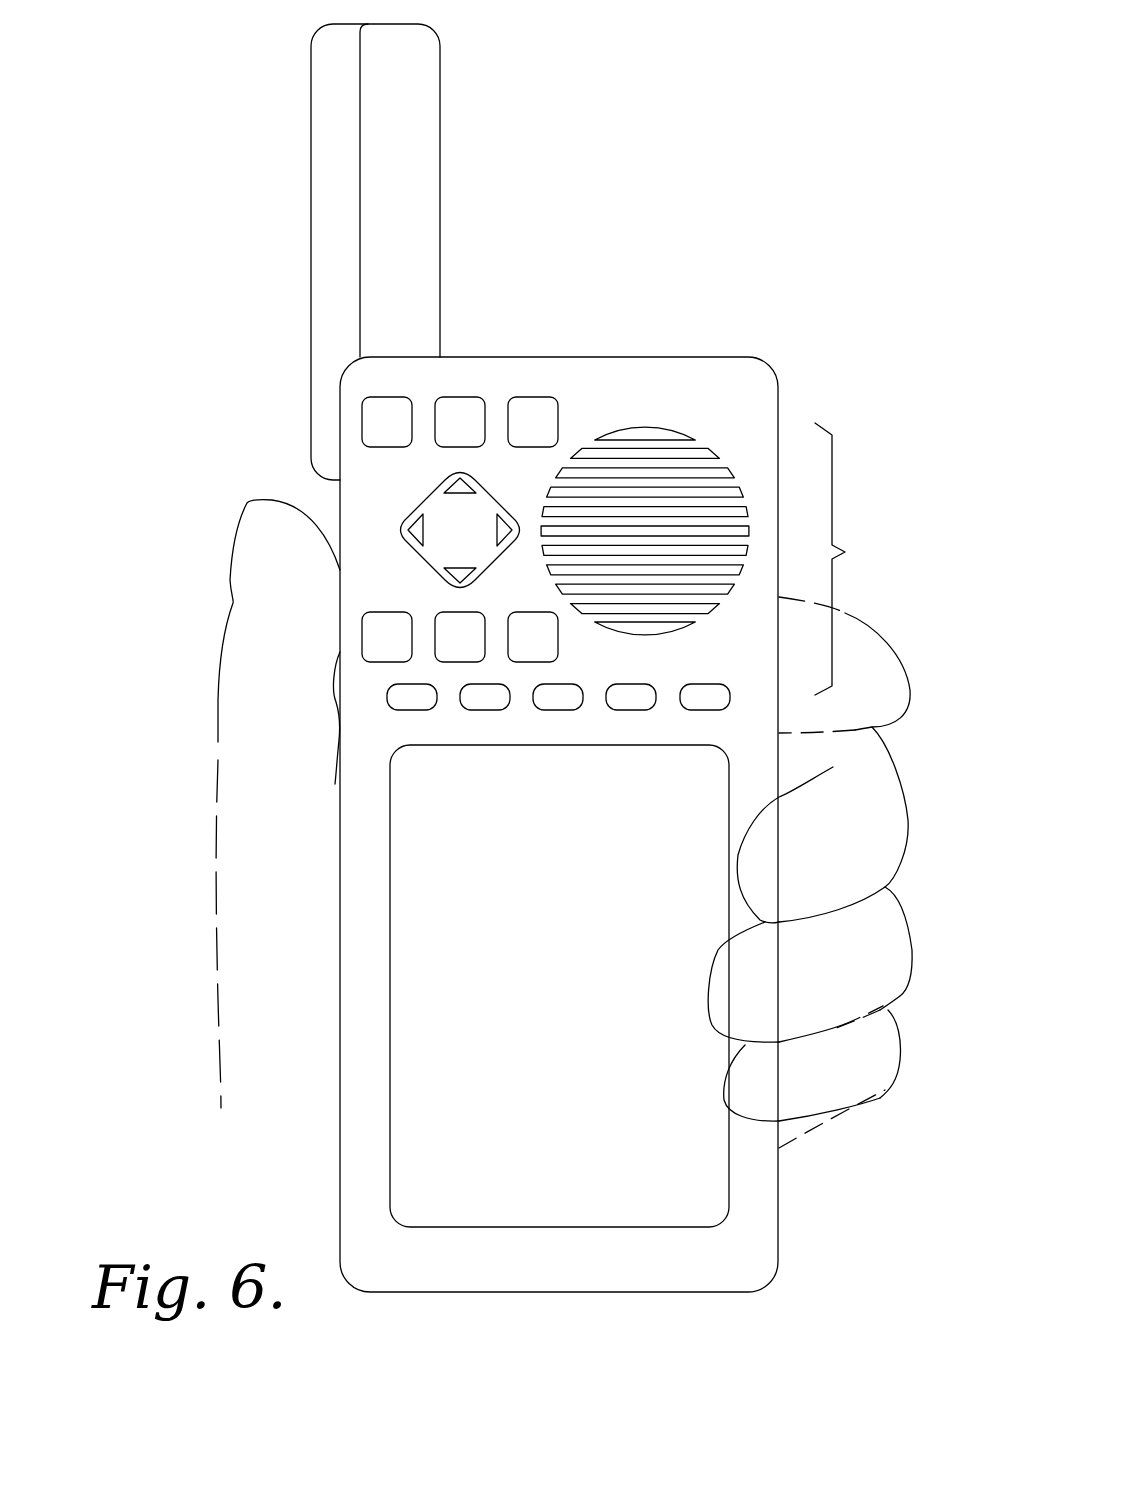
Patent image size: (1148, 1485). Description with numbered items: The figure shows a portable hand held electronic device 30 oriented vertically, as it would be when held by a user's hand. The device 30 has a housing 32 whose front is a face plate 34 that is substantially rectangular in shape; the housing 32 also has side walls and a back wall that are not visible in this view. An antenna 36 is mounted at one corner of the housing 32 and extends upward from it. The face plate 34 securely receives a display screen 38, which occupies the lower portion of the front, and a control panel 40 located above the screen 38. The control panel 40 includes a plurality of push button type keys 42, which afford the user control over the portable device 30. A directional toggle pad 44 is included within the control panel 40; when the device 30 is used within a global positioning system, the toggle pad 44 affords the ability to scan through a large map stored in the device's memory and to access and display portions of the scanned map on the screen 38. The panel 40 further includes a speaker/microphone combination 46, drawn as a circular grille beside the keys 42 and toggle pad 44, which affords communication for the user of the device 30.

The portable electronic device 30 is at (712, 245).
The housing 32 is at (630, 791).
The face plate 34 is at (745, 1256).
The antenna 36 is at (412, 128).
The display screen 38 is at (470, 1124).
The control panel 40 is at (858, 559).
The push button type keys 42 is at (372, 400).
The directional toggle pad 44 is at (450, 512).
The speaker/microphone combination 46 is at (643, 457).